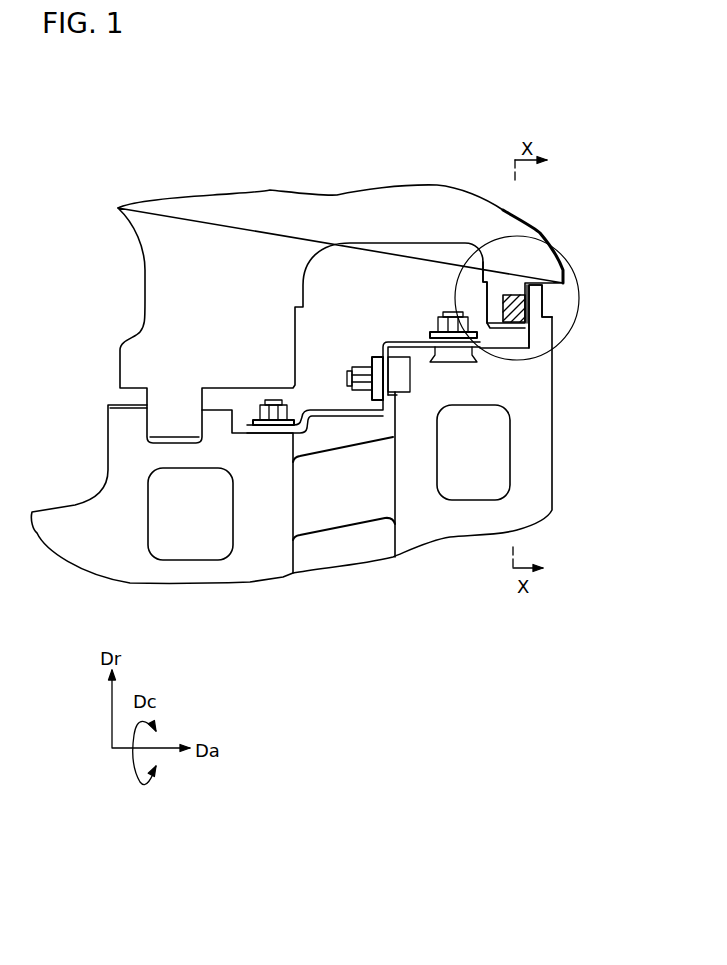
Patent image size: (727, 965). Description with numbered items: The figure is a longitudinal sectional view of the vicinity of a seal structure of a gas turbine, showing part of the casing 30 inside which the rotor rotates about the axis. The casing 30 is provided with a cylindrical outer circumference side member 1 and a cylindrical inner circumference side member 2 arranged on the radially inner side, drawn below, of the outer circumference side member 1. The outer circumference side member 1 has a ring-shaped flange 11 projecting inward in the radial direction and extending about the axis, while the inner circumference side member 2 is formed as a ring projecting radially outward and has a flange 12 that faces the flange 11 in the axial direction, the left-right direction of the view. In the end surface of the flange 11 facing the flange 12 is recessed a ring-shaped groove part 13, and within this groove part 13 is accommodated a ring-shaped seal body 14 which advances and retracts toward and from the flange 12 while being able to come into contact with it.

The outer circumference side member 1 is at (412, 207).
The inner circumference side member 2 is at (532, 458).
The flange 11 is at (480, 303).
The flange 12 is at (545, 300).
The groove part 13 is at (522, 311).
The seal body 14 is at (528, 291).
The casing 30 is at (517, 98).